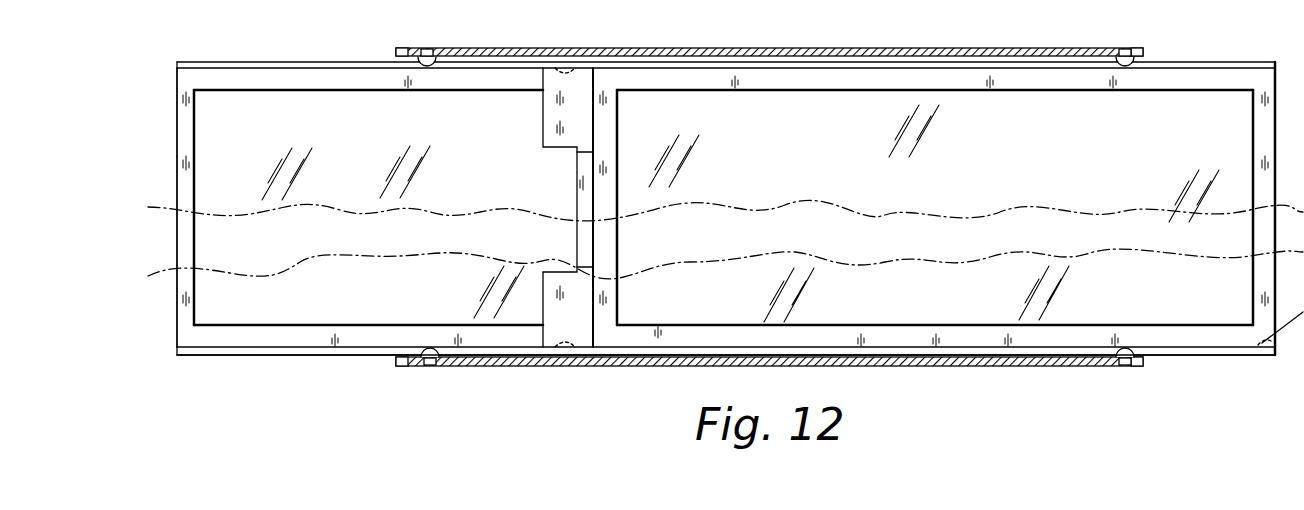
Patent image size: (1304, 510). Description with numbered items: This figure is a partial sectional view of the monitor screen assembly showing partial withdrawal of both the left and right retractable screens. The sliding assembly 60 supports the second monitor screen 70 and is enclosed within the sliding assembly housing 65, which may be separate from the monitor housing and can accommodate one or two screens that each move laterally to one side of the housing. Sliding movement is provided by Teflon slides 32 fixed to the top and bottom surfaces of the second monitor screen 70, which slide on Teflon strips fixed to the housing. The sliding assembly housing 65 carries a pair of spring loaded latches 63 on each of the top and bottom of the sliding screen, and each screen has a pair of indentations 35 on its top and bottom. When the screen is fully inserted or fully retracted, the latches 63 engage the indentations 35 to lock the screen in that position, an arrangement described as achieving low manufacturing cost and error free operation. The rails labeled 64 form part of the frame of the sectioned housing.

The Teflon slides 32 is at (254, 352).
The indentations 35 is at (180, 76).
The sliding assembly 60 is at (1237, 78).
The spring loaded latches 63 is at (430, 52).
The frame rail 64 is at (723, 240).
The sliding assembly housing 65 is at (547, 115).
The second monitor screen 70 is at (934, 213).